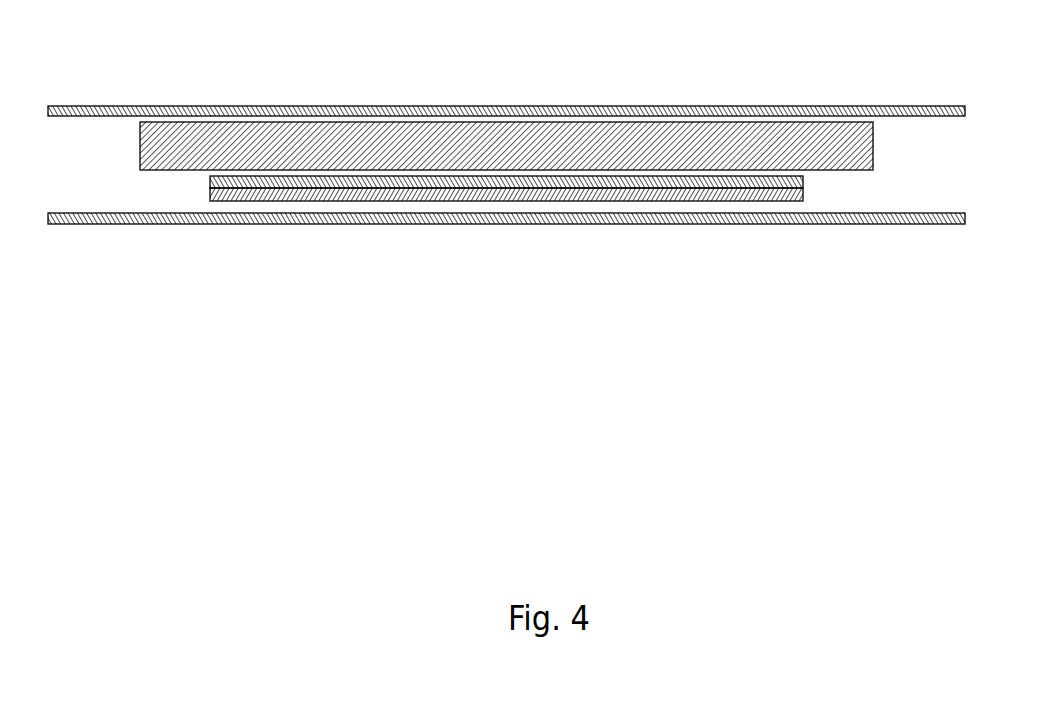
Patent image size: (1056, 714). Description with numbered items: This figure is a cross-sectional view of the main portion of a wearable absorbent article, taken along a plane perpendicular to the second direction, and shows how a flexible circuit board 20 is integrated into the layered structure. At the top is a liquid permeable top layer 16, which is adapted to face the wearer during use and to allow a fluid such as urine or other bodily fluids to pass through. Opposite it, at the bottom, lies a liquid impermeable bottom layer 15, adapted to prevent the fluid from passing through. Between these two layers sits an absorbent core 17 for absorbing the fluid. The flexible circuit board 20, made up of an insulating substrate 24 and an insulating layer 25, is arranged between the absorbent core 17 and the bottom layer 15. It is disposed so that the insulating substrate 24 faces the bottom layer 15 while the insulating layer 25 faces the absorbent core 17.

The liquid impermeable bottom layer 15 is at (165, 226).
The liquid permeable top layer 16 is at (134, 106).
The absorbent core 17 is at (243, 135).
The flexible circuit board 20 is at (625, 175).
The insulating substrate 24 is at (717, 202).
The insulating layer 25 is at (675, 178).